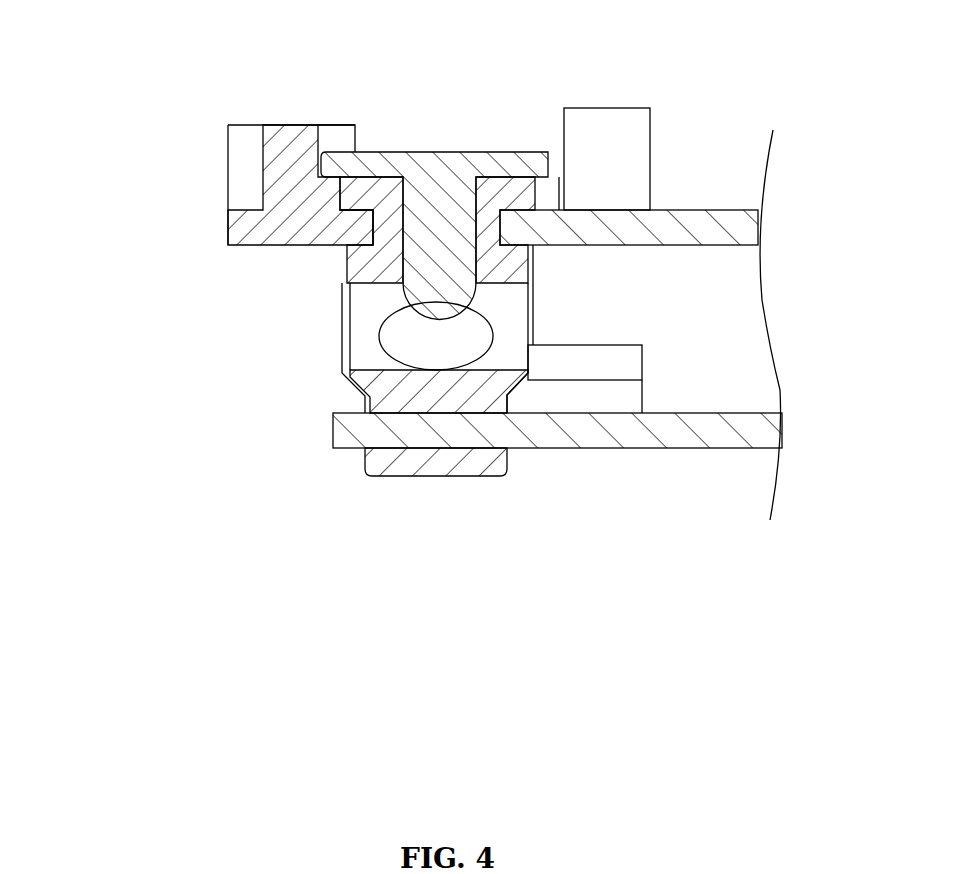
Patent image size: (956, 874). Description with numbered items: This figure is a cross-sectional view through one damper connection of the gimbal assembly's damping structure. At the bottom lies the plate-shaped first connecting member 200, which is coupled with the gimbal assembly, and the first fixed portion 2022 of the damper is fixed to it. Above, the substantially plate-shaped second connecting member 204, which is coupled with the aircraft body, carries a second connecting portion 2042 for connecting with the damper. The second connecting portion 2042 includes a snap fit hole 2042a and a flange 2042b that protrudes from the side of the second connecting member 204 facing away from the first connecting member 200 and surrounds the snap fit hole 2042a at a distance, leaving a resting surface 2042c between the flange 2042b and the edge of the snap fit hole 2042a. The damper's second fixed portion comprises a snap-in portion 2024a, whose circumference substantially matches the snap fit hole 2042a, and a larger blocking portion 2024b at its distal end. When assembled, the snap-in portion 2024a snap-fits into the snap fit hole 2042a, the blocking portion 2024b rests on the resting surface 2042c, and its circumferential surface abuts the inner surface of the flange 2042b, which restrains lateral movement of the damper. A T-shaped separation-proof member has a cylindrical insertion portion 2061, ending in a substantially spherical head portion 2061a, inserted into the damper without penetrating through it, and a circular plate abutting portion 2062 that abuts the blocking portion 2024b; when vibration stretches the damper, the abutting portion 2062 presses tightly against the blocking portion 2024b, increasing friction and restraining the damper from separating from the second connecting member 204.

The first connecting member 200 is at (350, 430).
The first fixed portion 2022 is at (417, 471).
The second connecting member 204 is at (695, 227).
The second connecting portion 2042 is at (677, 57).
The snap fit hole 2042a is at (527, 232).
The flange 2042b is at (535, 177).
The resting surface 2042c is at (367, 215).
The snap-in portion 2024a is at (483, 178).
The blocking portion 2024b is at (339, 188).
The insertion portion 2061 is at (345, 248).
The head portion 2061a is at (385, 311).
The abutting portion 2062 is at (418, 156).